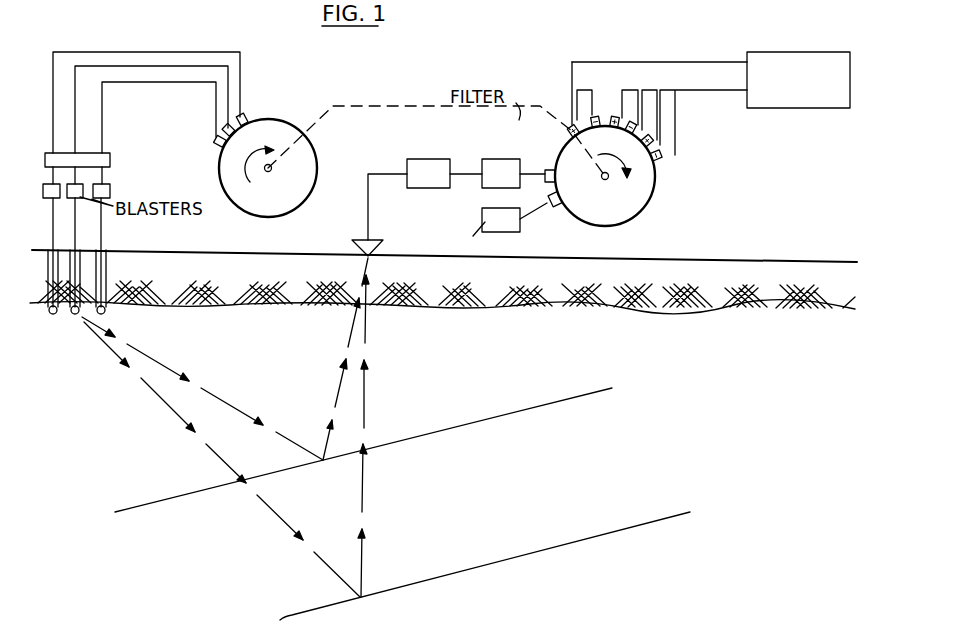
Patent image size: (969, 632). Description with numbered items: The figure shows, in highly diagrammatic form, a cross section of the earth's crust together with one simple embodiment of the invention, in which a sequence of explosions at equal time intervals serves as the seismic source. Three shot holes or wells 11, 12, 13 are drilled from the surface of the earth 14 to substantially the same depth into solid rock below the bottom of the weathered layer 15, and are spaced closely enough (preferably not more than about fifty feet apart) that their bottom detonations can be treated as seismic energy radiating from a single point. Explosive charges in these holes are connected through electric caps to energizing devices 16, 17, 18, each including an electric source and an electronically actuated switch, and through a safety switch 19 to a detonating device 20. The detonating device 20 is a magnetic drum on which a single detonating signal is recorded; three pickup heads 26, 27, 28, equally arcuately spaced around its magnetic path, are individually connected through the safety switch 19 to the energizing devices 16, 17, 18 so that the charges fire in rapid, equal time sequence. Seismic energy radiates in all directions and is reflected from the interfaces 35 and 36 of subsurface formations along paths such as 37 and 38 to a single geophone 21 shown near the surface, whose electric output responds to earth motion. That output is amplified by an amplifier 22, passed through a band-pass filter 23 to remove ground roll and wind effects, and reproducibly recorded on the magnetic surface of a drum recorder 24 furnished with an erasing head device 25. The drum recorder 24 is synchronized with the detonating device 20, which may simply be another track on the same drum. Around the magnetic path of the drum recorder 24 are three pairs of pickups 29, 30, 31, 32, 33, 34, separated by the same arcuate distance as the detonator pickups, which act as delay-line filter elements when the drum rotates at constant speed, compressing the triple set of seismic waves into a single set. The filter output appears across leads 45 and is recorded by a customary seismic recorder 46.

The shot hole 11 is at (50, 316).
The shot hole 12 is at (74, 316).
The shot hole 13 is at (105, 312).
The surface of the earth 14 is at (161, 250).
The weathered layer 15 is at (197, 305).
The energizing device 16 is at (50, 199).
The energizing device 17 is at (78, 199).
The energizing device 18 is at (104, 195).
The safety switch 19 is at (156, 137).
The detonating device 20 is at (279, 122).
The geophone 21 is at (372, 250).
The amplifier 22 is at (417, 162).
The band-pass filter 23 is at (498, 168).
The magnetic drum recorder 24 is at (645, 215).
The erasing head device 25 is at (504, 228).
The pickup head 26 is at (215, 143).
The pickup head 27 is at (222, 128).
The pickup head 28 is at (248, 115).
The pickup 29 is at (571, 120).
The pickup 30 is at (597, 115).
The pickup 31 is at (619, 115).
The pickup 32 is at (636, 120).
The pickup 33 is at (660, 143).
The pickup 34 is at (670, 158).
The interface 35 is at (436, 437).
The interface 36 is at (431, 578).
The path 37 is at (197, 386).
The path 38 is at (186, 425).
The leads 45 is at (717, 92).
The seismic recorder 46 is at (773, 61).